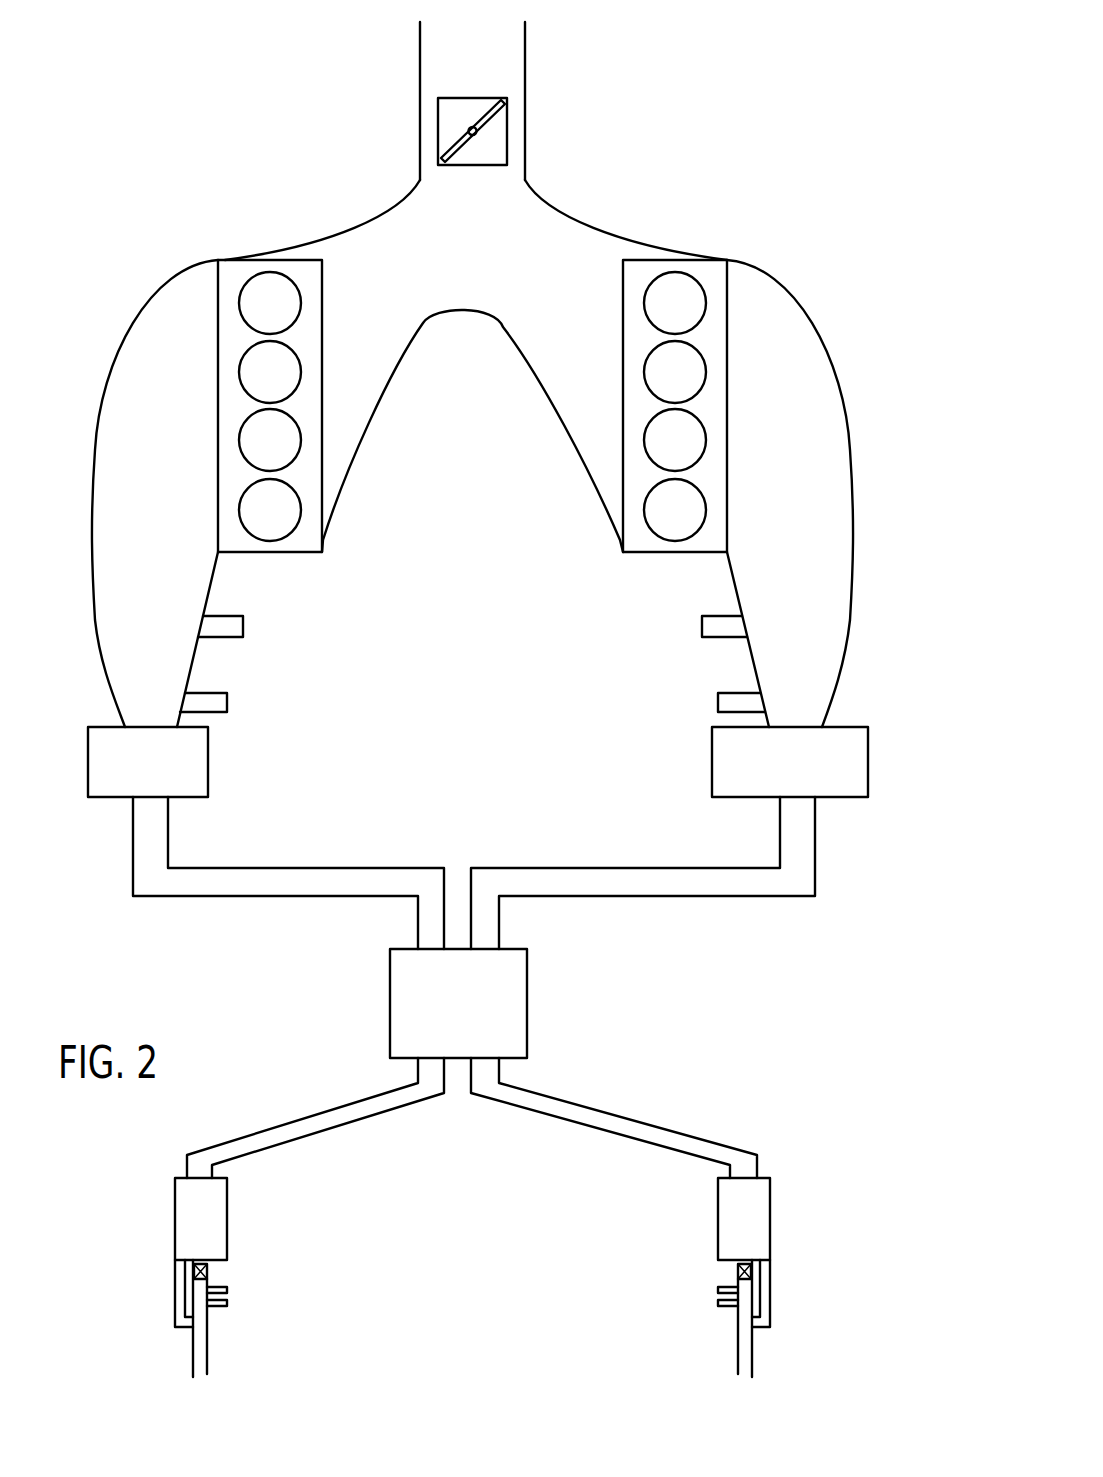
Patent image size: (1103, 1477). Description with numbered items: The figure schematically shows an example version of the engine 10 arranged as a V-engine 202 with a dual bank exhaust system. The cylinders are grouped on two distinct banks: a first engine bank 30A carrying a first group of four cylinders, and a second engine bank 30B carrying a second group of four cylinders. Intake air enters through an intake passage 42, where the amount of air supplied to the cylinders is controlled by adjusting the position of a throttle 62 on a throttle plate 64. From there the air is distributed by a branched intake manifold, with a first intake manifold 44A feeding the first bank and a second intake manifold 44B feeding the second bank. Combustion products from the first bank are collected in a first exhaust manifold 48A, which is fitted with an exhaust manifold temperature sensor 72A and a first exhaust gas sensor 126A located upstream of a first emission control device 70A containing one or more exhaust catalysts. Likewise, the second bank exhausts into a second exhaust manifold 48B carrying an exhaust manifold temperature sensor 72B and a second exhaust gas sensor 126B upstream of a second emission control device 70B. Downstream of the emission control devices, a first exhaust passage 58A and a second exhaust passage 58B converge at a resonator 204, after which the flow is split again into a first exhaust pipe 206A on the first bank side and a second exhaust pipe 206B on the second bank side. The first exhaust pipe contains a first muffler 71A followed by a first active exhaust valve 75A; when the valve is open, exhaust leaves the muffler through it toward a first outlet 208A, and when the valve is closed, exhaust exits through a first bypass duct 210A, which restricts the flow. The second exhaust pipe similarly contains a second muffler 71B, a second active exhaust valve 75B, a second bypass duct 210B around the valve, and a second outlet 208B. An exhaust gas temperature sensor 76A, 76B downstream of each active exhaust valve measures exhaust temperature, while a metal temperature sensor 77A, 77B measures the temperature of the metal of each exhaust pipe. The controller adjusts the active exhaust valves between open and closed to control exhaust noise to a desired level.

The engine 10 is at (719, 44).
The V-engine 202 is at (206, 100).
The intake passage 42 is at (500, 59).
The throttle 62 is at (438, 127).
The throttle plate 64 is at (465, 140).
The first engine bank 30A is at (665, 258).
The second engine bank 30B is at (260, 258).
The first intake manifold 44A is at (606, 300).
The second intake manifold 44B is at (379, 300).
The first exhaust manifold 48A is at (814, 593).
The second exhaust manifold 48B is at (169, 593).
The exhaust manifold temperature sensor 72A is at (701, 622).
The exhaust manifold temperature sensor 72B is at (244, 622).
The first exhaust gas sensor 126A is at (718, 693).
The second exhaust gas sensor 126B is at (213, 693).
The first emission control device 70A is at (807, 775).
The second emission control device 70B is at (165, 775).
The first exhaust passage 58A is at (612, 866).
The second exhaust passage 58B is at (309, 867).
The resonator 204 is at (475, 1013).
The first exhaust pipe 206A is at (617, 1133).
The second exhaust pipe 206B is at (337, 1132).
The first muffler 71A is at (762, 1230).
The second muffler 71B is at (218, 1230).
The first active exhaust valve 75A is at (733, 1272).
The second active exhaust valve 75B is at (210, 1272).
The exhaust gas temperature sensor 76A is at (716, 1289).
The exhaust gas temperature sensor 76B is at (228, 1289).
The metal temperature sensor 77A is at (716, 1303).
The metal temperature sensor 77B is at (228, 1303).
The first outlet 208A is at (754, 1376).
The second outlet 208B is at (190, 1376).
The first bypass duct 210A is at (772, 1290).
The second bypass duct 210B is at (172, 1278).